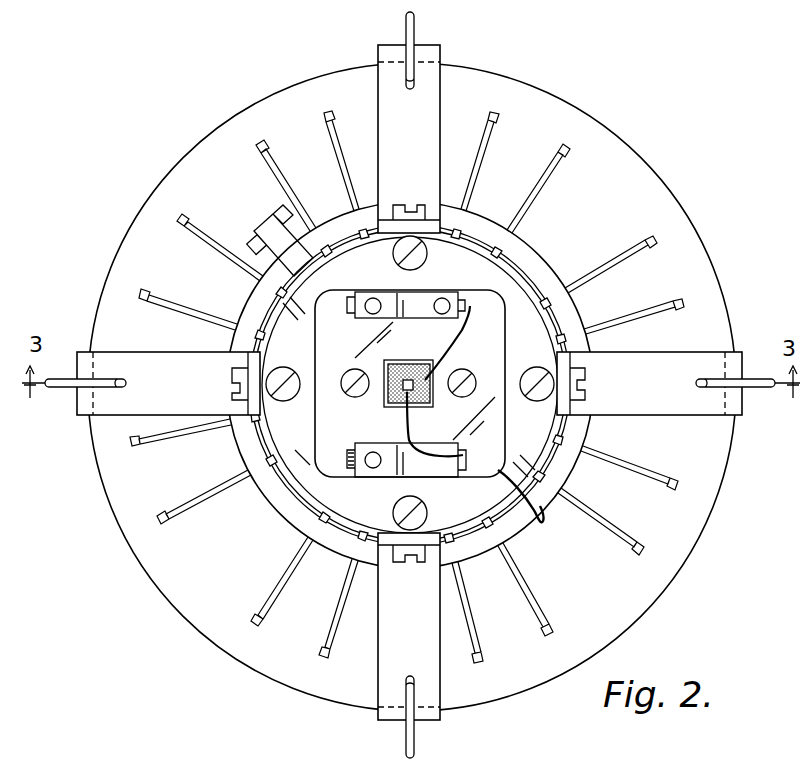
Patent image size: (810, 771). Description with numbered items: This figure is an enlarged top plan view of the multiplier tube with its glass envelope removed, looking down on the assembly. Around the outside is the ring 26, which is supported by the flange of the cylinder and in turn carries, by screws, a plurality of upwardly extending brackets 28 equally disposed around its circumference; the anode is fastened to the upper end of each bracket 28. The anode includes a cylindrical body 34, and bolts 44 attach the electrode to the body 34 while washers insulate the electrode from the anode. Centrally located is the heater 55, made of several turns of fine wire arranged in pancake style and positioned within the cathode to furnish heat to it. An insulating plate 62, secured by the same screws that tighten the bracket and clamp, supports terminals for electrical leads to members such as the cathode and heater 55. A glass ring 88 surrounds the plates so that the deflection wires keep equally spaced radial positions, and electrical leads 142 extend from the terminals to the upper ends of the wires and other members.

The ring 26 is at (700, 516).
The bracket 28 is at (430, 48).
The cylindrical body 34 is at (510, 277).
The bolt 44 is at (428, 258).
The heater 55 is at (400, 405).
The insulating plate 62 is at (497, 351).
The glass ring 88 is at (283, 510).
The electrical leads 142 is at (563, 149).